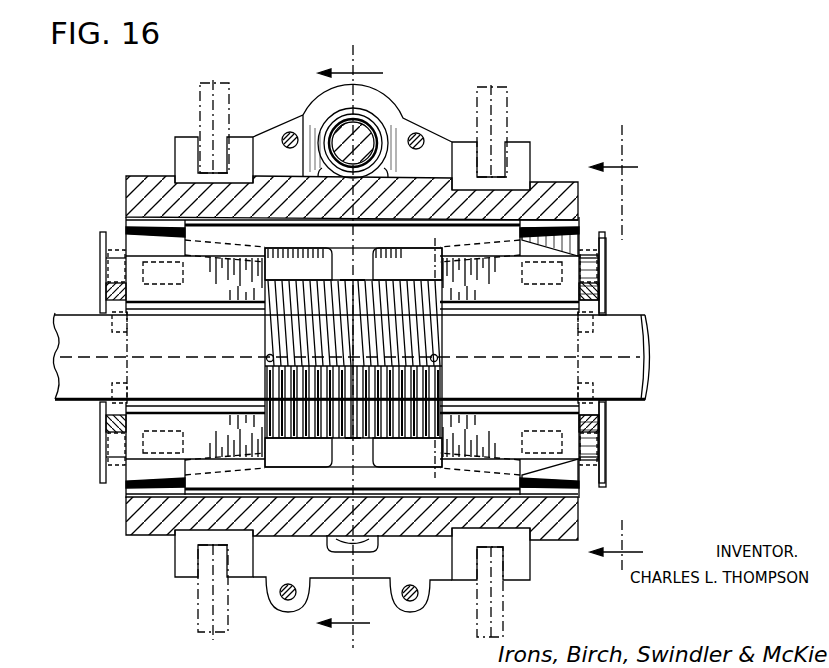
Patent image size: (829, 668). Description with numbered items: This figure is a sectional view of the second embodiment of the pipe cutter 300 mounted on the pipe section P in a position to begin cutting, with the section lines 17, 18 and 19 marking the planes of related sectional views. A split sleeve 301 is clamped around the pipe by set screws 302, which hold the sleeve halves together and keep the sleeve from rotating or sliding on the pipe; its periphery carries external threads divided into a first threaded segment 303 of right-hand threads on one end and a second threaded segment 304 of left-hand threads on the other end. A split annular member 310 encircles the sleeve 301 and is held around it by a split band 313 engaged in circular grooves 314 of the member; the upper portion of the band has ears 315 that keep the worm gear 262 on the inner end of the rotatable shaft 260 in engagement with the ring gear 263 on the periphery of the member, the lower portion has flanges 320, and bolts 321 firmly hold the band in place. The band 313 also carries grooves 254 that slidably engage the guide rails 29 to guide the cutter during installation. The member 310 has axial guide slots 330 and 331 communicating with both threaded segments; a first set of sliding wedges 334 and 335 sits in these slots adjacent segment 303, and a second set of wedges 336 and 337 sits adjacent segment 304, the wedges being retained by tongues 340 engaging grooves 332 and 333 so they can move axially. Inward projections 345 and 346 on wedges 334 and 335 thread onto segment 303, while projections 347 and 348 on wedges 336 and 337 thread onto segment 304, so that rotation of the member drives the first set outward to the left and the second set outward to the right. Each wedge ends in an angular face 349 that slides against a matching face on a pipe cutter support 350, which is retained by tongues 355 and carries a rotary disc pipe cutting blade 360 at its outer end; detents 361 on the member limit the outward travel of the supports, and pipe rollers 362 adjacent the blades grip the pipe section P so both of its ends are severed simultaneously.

The pipe cutter 300 is at (128, 176).
The split annular member 310 is at (126, 522).
The split band 313 is at (183, 140).
The circular grooves 314 is at (178, 176).
The ears 315 is at (292, 122).
The grooves 254 is at (222, 143).
The guide rails 29 is at (499, 118).
The flanges 320 is at (284, 600).
The bolts 321 is at (423, 138).
The worm gear 262 is at (356, 128).
The rotatable shaft 260 is at (340, 140).
The ring gear 263 is at (386, 143).
The axial guide slot 330 is at (126, 222).
The axial guide slot 331 is at (126, 480).
The groove 332 is at (580, 205).
The groove 333 is at (126, 492).
The sliding wedge 334 is at (200, 254).
The sliding wedge 335 is at (218, 476).
The sliding wedge 336 is at (463, 252).
The sliding wedge 337 is at (470, 478).
The tongues 340 is at (247, 218).
The inward projection 345 is at (330, 268).
The inward projection 346 is at (338, 452).
The projection 347 is at (358, 266).
The projection 348 is at (360, 448).
The angular face 349 is at (230, 460).
The pipe cutter supports 350 is at (178, 302).
The tongues 355 is at (142, 263).
The pipe cutting blades 360 is at (100, 245).
The detents 361 is at (114, 289).
The pipe rollers 362 is at (113, 376).
The split sleeve 301 is at (330, 357).
The set screws 302 is at (438, 360).
The first threaded segment 303 is at (268, 358).
The second threaded segment 304 is at (438, 336).
The section line 17 is at (350, 347).
The section line 18 is at (623, 347).
The section line 19 is at (460, 262).
The pipe section P is at (632, 318).